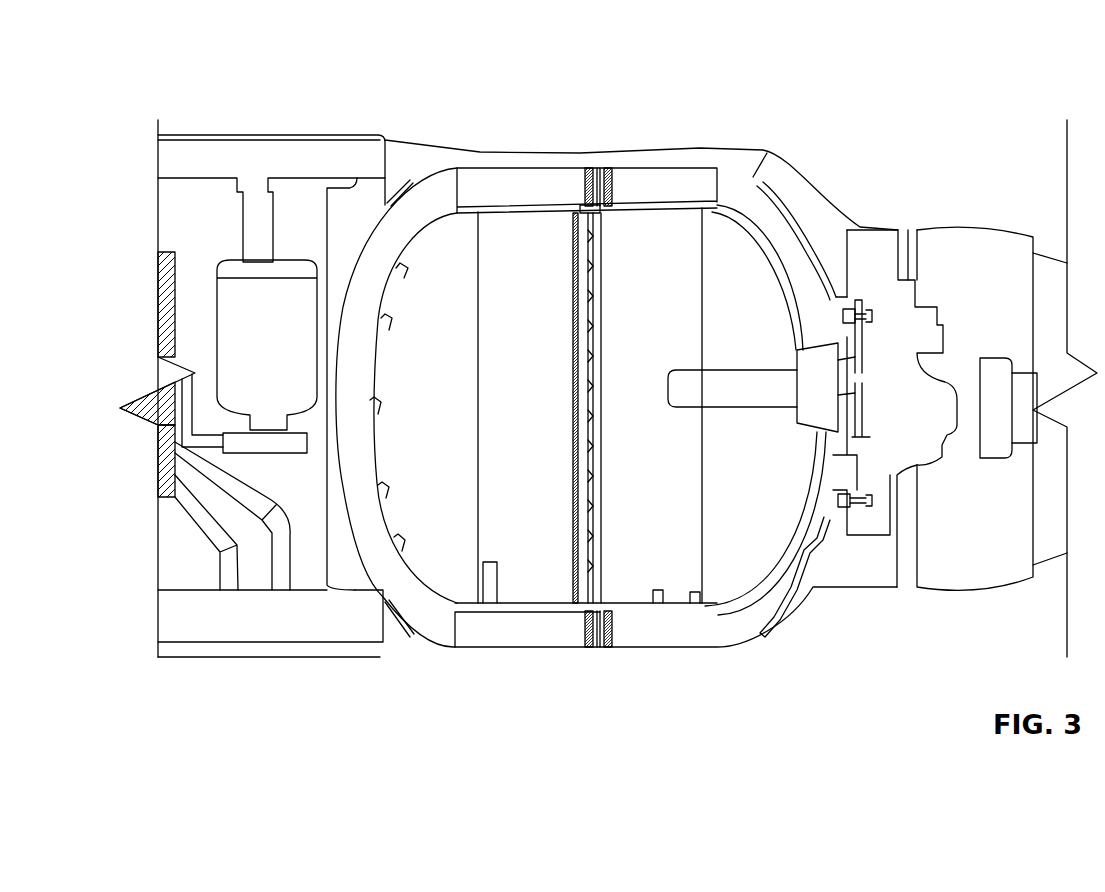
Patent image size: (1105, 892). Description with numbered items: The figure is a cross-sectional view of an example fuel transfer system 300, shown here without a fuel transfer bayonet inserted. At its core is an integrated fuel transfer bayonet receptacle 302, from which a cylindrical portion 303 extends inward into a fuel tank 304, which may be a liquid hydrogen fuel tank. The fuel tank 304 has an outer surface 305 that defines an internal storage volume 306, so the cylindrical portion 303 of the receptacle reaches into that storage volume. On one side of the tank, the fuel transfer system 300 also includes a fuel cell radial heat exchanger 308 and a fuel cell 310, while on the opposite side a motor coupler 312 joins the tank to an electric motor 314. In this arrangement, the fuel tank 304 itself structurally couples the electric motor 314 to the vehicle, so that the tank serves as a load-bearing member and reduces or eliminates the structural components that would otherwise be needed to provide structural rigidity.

The fuel transfer system 300 is at (995, 42).
The integrated fuel transfer bayonet receptacle 302 is at (810, 370).
The cylindrical portion 303 is at (690, 395).
The fuel tank 304 is at (578, 160).
The outer surface 305 is at (650, 185).
The internal storage volume 306 is at (666, 450).
The fuel cell radial heat exchanger 308 is at (290, 150).
The fuel cell 310 is at (158, 326).
The motor coupler 312 is at (865, 240).
The electric motor 314 is at (960, 240).